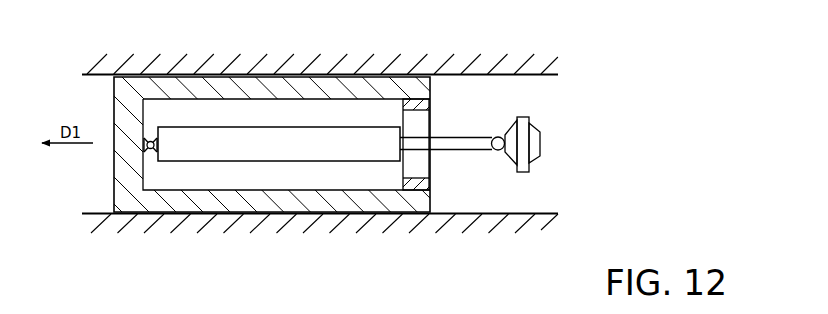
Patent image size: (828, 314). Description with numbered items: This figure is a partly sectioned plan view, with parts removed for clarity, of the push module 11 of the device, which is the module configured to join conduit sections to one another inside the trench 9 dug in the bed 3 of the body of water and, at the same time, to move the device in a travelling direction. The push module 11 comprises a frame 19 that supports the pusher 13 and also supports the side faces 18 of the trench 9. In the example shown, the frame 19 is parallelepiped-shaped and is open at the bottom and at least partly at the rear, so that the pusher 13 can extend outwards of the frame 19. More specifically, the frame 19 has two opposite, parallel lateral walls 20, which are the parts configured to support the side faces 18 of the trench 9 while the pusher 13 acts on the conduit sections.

The bed 3 is at (246, 62).
The trench 9 is at (525, 99).
The push module 11 is at (483, 41).
The pusher 13 is at (338, 125).
The side faces 18 is at (545, 79).
The frame 19 is at (442, 105).
The lateral walls 20 is at (207, 86).